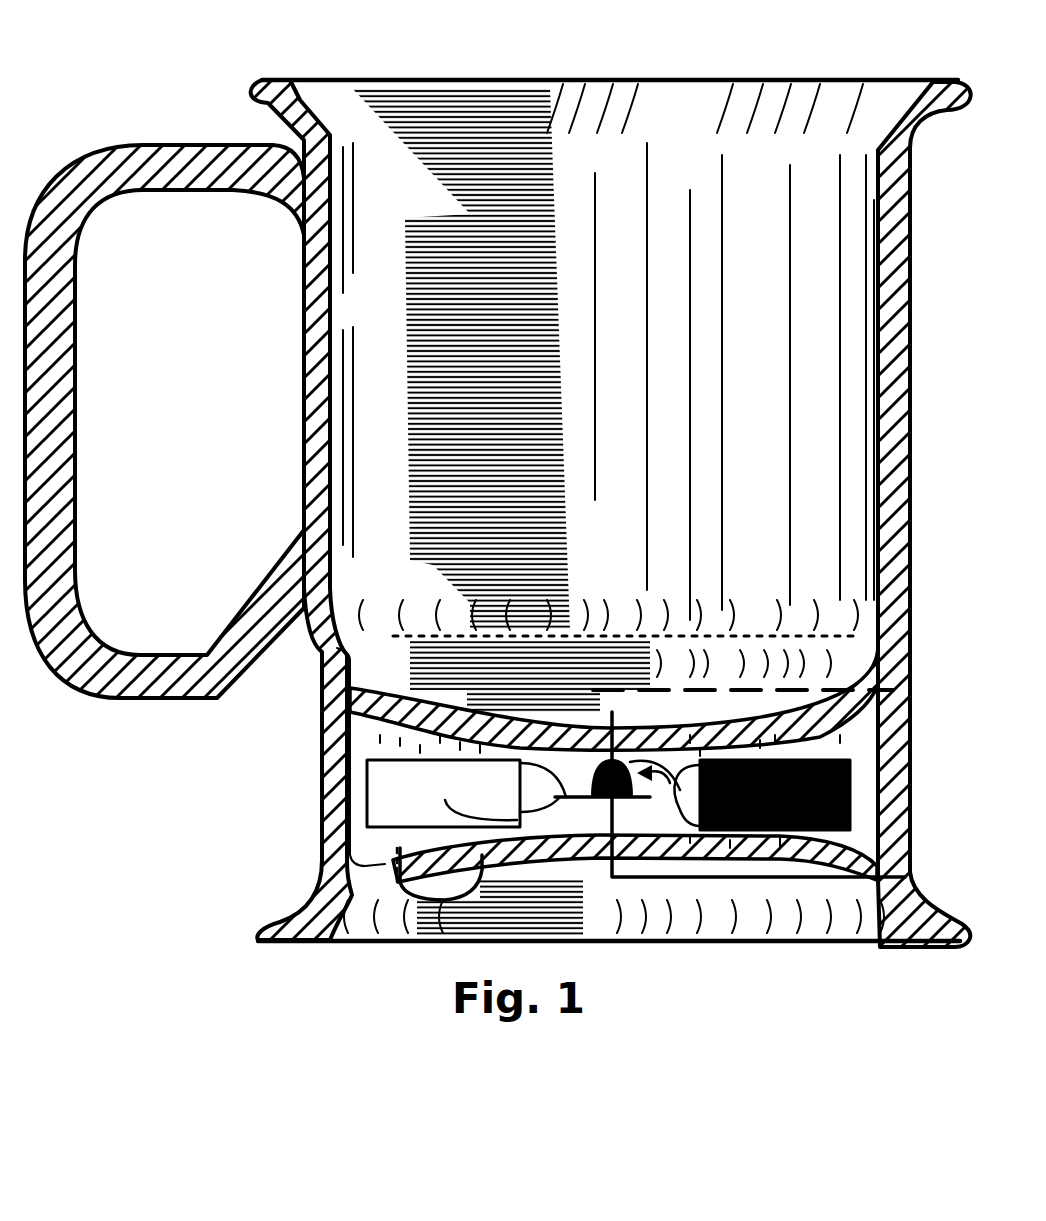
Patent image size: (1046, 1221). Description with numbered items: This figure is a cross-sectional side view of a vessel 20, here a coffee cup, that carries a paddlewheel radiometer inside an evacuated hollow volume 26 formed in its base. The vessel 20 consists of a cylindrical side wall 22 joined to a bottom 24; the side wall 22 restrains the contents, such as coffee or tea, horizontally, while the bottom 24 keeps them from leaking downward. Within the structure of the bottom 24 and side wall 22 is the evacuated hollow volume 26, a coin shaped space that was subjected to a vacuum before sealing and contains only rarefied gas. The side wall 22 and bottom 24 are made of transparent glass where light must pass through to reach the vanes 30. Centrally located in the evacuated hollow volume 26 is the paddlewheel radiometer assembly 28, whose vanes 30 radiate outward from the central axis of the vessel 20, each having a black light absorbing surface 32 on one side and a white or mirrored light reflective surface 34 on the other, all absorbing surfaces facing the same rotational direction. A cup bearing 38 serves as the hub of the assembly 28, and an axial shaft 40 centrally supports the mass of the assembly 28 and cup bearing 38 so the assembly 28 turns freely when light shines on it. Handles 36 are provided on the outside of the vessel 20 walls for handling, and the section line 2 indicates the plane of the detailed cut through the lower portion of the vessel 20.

The section line 2- 2 is at (780, 787).
The vessel 20 is at (498, 474).
The side wall 22 is at (317, 333).
The bottom 24 is at (888, 668).
The evacuated hollow volume 26 is at (556, 826).
The paddlewheel radiometer assembly 28 is at (875, 813).
The vanes 30 is at (367, 780).
The light absorbing surface 32 is at (878, 832).
The light reflective surface 34 is at (450, 790).
The handles 36 is at (183, 177).
The cup bearing 38 is at (612, 748).
The axial shaft 40 is at (605, 747).